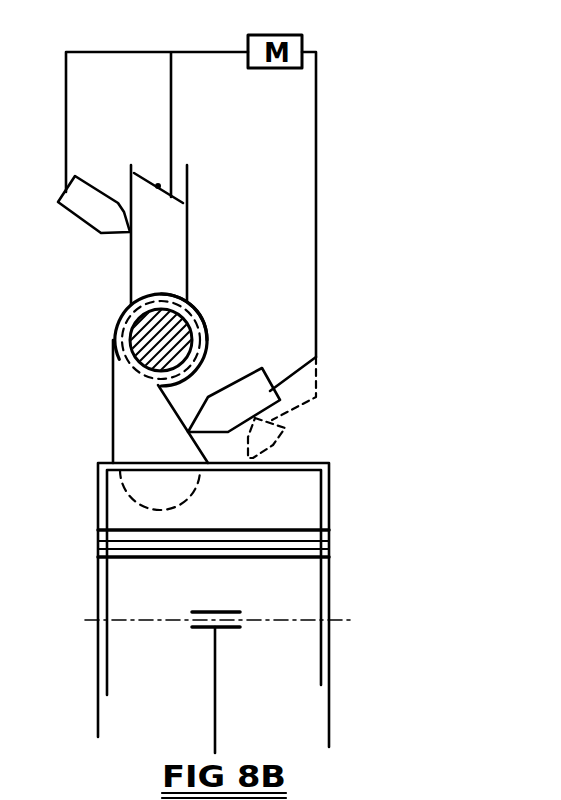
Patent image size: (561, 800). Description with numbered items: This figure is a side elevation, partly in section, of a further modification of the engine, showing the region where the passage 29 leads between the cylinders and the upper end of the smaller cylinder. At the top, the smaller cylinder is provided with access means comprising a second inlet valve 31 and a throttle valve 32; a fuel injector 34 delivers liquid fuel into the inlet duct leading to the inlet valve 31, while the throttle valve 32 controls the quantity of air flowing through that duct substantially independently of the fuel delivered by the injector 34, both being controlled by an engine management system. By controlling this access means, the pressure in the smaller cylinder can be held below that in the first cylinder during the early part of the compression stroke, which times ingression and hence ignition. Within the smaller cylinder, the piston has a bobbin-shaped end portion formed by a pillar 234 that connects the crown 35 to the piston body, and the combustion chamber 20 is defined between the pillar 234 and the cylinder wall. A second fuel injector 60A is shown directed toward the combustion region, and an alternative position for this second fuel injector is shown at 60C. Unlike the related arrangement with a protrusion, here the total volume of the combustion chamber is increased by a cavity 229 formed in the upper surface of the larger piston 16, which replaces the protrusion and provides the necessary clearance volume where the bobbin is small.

The piston 16 is at (114, 517).
The combustion chamber 20 is at (118, 348).
The passage 29 is at (135, 413).
The second inlet valve 31 is at (196, 341).
The throttle valve 32 is at (143, 174).
The fuel injector 34 is at (64, 194).
The crown 35 is at (202, 307).
The fuel injector 60A is at (266, 396).
The alternative position for the second fuel injector 60C is at (275, 443).
The cavity 229 is at (147, 483).
The pillar 234 is at (137, 324).